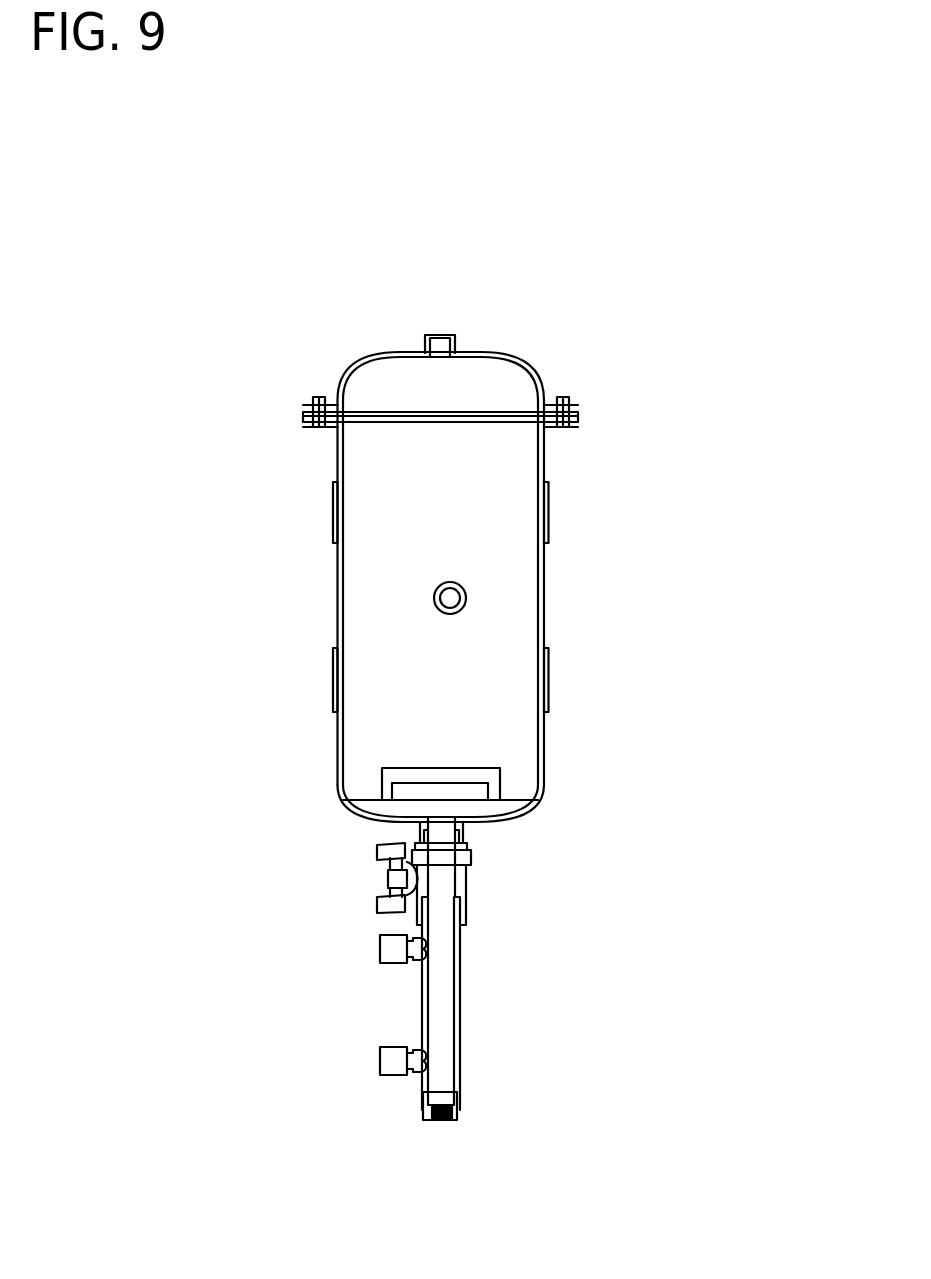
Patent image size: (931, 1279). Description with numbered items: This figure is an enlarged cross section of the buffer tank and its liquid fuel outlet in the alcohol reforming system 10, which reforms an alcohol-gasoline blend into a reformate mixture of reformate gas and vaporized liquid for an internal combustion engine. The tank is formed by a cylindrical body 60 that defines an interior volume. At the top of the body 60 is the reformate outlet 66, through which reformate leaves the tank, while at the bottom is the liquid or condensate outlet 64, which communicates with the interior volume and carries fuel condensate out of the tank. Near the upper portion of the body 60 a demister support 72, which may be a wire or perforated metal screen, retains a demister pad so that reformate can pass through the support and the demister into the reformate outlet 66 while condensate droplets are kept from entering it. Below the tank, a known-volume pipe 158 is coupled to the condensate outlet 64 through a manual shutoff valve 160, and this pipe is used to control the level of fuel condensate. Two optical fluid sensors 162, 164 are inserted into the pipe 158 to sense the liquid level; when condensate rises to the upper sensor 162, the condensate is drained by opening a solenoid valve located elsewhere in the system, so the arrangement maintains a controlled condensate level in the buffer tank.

The alcohol reforming system 10 is at (656, 485).
The body 60 is at (545, 612).
The liquid or condensate outlet 64 is at (470, 832).
The reformate outlet 66 is at (458, 342).
The demister support 72 is at (413, 422).
The known-volume pipe 158 is at (460, 1000).
The manual shutoff valve 160 is at (387, 860).
The optical fluid sensor 162 is at (376, 948).
The optical fluid sensor 164 is at (376, 1060).